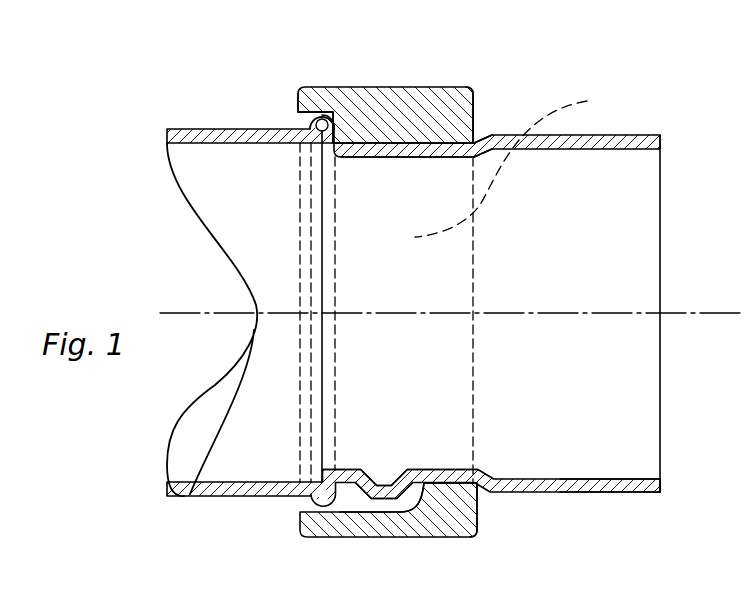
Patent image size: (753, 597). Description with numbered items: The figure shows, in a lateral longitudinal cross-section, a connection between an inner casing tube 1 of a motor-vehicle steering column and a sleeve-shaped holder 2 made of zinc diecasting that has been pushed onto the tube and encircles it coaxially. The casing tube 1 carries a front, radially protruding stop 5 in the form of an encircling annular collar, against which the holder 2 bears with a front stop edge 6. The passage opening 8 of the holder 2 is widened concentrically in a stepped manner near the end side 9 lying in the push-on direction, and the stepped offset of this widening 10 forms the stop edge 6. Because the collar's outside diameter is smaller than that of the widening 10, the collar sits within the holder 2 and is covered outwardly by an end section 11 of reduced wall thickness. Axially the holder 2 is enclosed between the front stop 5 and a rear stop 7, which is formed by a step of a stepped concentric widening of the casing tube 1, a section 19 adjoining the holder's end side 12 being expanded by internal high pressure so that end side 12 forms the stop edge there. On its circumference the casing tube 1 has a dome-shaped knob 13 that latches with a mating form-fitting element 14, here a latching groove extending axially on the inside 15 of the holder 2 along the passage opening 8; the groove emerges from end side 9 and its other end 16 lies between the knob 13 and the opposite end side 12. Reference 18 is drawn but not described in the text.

The inner casing tube 1 is at (200, 493).
The holder 2 is at (395, 88).
The front stop 5 is at (312, 127).
The front stop edge 6 is at (326, 117).
The rear stop 7 is at (489, 134).
The passage opening 8 is at (512, 161).
The end side 9 is at (298, 518).
The widening 10 is at (298, 113).
The end section 11 is at (320, 118).
The end side 12 is at (475, 100).
The dome-shaped knob 13 is at (394, 478).
The mating form-fitting element 14 is at (377, 503).
The inside 15 is at (423, 150).
The other end 16 is at (478, 503).
The ring recess 18 is at (297, 118).
The section 19 is at (623, 483).